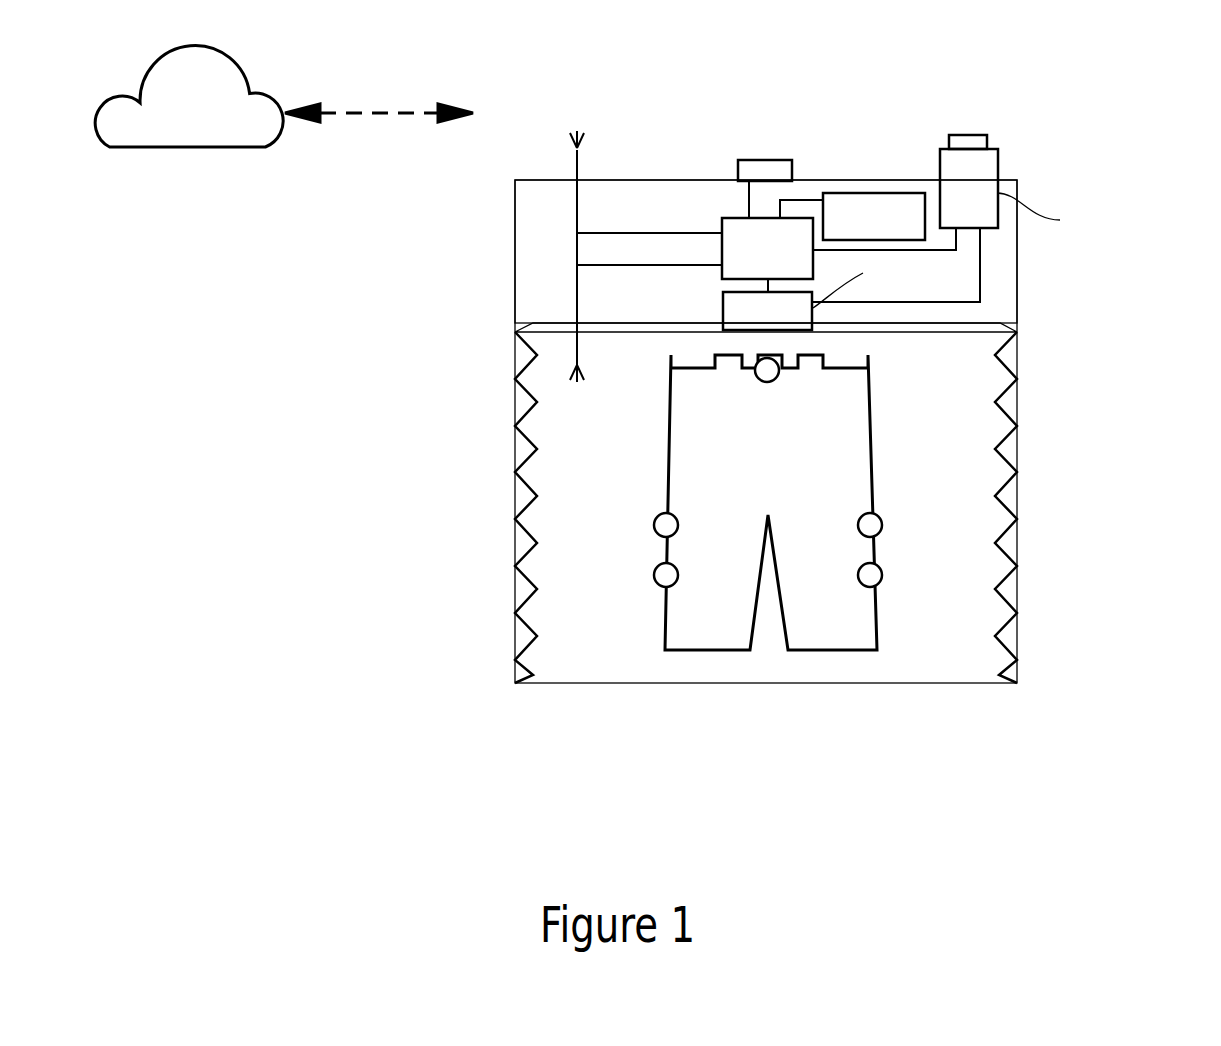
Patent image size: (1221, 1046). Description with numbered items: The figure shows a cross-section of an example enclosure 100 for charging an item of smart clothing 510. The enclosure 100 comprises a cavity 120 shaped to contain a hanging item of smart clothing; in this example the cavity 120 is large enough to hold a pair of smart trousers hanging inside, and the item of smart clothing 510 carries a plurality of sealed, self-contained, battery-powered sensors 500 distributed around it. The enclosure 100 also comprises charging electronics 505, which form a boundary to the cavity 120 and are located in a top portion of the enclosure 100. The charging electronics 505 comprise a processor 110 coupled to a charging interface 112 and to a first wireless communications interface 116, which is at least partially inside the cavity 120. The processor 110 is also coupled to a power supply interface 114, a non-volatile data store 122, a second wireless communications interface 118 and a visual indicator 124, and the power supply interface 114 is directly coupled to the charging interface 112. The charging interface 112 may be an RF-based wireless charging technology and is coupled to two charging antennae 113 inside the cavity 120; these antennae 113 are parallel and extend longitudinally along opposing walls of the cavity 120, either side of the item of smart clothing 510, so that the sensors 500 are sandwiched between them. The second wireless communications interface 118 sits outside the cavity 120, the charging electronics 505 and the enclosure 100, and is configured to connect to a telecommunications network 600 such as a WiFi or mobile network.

The enclosure 100 is at (344, 394).
The processor 110 is at (793, 251).
The charging interface 112 is at (795, 326).
The charging antennae 113 is at (515, 522).
The power supply interface 114 is at (992, 199).
The first wireless communications interface 116 is at (628, 357).
The second wireless communications interface 118 is at (596, 160).
The cavity 120 is at (860, 685).
The non-volatile data store 122 is at (892, 153).
The visual indicator 124 is at (765, 160).
The sensors 500 is at (767, 372).
The charging electronics 505 is at (515, 258).
The item of smart clothing 510 is at (702, 651).
The telecommunications network 600 is at (217, 104).